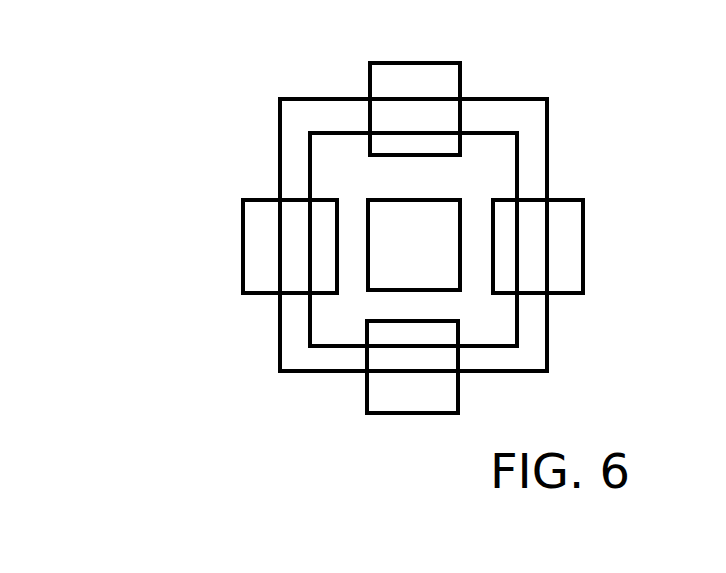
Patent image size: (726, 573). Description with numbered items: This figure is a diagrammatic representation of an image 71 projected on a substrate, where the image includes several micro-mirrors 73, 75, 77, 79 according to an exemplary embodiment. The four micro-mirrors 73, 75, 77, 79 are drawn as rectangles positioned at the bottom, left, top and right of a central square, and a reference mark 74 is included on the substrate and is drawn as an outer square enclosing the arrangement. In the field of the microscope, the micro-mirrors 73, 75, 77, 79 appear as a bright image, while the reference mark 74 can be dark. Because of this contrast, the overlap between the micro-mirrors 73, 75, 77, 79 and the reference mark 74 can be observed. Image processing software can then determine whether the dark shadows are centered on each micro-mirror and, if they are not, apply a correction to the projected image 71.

The image 71 is at (243, 323).
The micro-mirror 73 is at (367, 397).
The reference mark 74 is at (527, 362).
The micro-mirror 75 is at (243, 220).
The micro-mirror 77 is at (460, 63).
The micro-mirror 79 is at (583, 255).